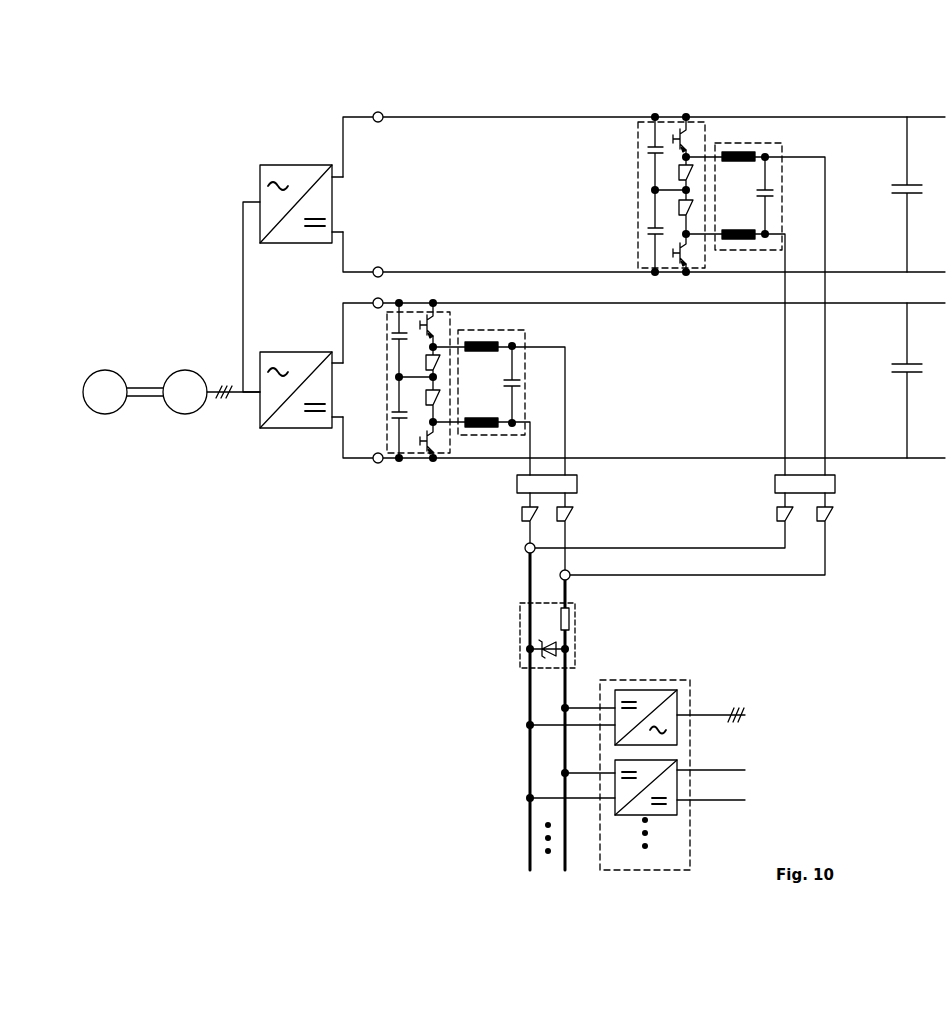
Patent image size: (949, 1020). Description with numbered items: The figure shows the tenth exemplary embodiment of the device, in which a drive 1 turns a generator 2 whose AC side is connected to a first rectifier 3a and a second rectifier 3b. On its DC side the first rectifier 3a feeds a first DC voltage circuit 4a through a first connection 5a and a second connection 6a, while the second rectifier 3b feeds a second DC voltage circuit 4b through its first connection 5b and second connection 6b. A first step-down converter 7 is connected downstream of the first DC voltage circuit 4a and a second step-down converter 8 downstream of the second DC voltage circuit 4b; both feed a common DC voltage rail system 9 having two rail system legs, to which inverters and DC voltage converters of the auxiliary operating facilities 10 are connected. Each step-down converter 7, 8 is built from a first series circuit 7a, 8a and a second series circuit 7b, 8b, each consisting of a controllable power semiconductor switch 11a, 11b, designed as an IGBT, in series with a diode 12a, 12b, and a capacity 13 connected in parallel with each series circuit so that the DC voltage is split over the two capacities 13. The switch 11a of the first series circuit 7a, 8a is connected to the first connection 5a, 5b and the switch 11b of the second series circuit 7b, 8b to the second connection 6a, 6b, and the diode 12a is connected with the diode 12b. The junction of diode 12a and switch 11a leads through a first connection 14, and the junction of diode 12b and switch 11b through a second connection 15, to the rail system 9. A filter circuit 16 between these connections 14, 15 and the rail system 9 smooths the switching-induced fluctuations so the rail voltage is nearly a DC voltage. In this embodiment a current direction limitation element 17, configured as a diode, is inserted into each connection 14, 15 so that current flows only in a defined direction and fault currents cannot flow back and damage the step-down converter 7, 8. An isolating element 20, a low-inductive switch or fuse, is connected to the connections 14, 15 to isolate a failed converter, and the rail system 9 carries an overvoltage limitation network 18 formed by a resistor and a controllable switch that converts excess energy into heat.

The wind turbine rotor / generator drive 1 is at (103, 370).
The generator 2 is at (180, 370).
The first rectifier 3a is at (267, 352).
The second rectifier 3b is at (278, 165).
The first DC voltage circuit 4a is at (367, 393).
The second DC voltage circuit 4b is at (355, 220).
The first connection of the first DC voltage circuit 5a is at (378, 303).
The first connection of the second DC voltage circuit 5b is at (378, 112).
The second connection of the first DC voltage circuit 6a is at (395, 458).
The second connection of the second DC voltage circuit 6b is at (396, 328).
The first step-down converter 7 is at (449, 338).
The first series circuit of the first step-down converter 7a is at (442, 322).
The second series circuit of the first step-down converter 7b is at (410, 428).
The second step-down converter 8 is at (692, 200).
The first series circuit of the second step-down converter 8a is at (692, 165).
The second series circuit of the second step-down converter 8b is at (694, 215).
The common DC voltage rail system 9 is at (545, 757).
The auxiliary operating facilities 10 is at (600, 693).
The controllable power semiconductor switch of the first series circuit 11a is at (411, 310).
The controllable power semiconductor switch of the second series circuit 11b is at (373, 458).
The diode of the first series circuit 12a is at (460, 330).
The diode of the second series circuit 12b is at (457, 340).
The capacity 13 is at (393, 312).
The first connection 14 is at (790, 465).
The second connection 15 is at (828, 468).
The filter circuit 16 is at (486, 330).
The current direction limitation element 17 is at (818, 523).
The overvoltage limitation network 18 is at (520, 665).
The isolating element 20 is at (517, 495).